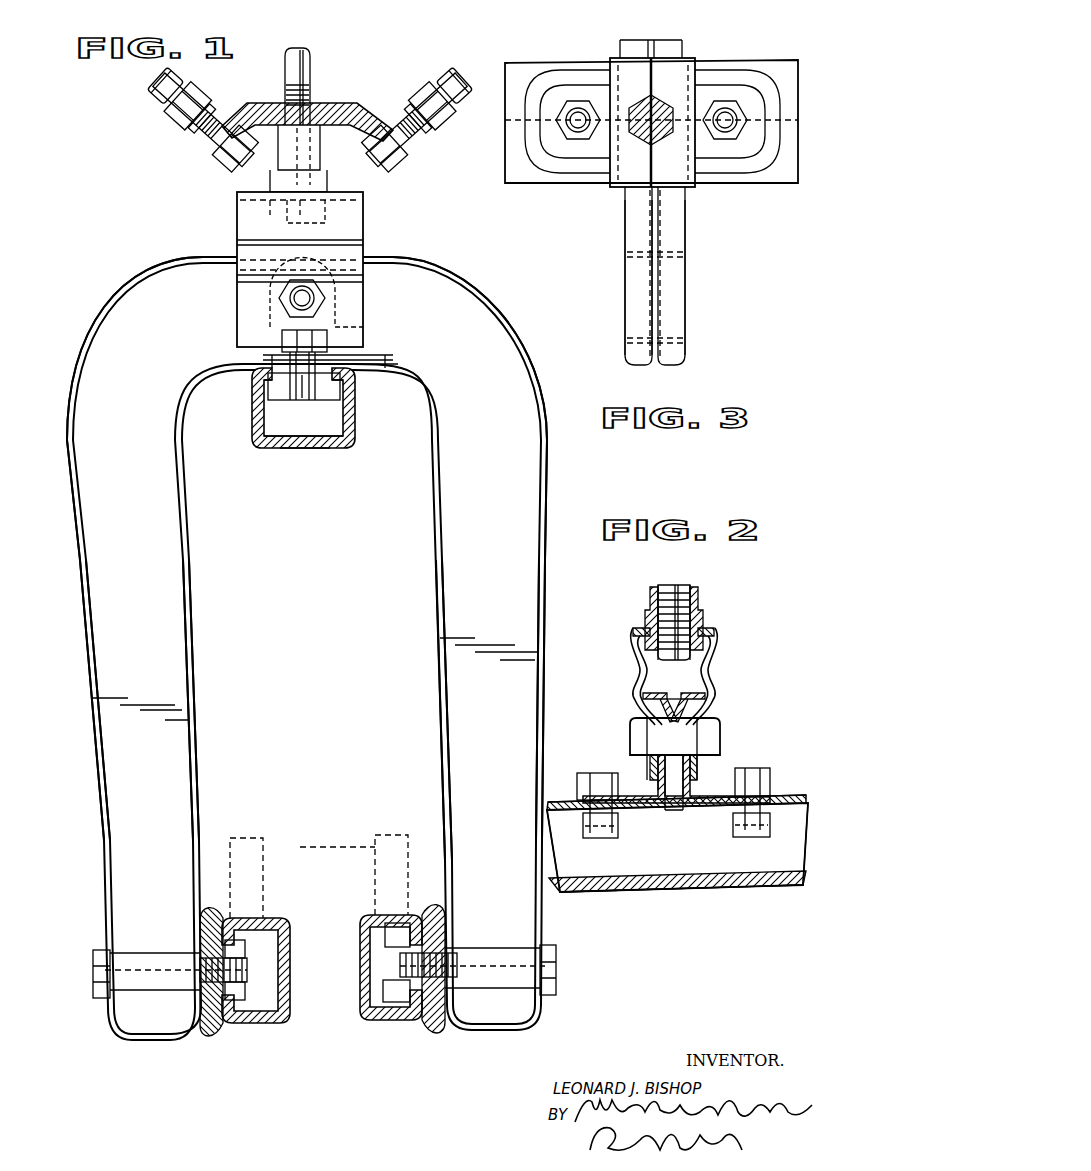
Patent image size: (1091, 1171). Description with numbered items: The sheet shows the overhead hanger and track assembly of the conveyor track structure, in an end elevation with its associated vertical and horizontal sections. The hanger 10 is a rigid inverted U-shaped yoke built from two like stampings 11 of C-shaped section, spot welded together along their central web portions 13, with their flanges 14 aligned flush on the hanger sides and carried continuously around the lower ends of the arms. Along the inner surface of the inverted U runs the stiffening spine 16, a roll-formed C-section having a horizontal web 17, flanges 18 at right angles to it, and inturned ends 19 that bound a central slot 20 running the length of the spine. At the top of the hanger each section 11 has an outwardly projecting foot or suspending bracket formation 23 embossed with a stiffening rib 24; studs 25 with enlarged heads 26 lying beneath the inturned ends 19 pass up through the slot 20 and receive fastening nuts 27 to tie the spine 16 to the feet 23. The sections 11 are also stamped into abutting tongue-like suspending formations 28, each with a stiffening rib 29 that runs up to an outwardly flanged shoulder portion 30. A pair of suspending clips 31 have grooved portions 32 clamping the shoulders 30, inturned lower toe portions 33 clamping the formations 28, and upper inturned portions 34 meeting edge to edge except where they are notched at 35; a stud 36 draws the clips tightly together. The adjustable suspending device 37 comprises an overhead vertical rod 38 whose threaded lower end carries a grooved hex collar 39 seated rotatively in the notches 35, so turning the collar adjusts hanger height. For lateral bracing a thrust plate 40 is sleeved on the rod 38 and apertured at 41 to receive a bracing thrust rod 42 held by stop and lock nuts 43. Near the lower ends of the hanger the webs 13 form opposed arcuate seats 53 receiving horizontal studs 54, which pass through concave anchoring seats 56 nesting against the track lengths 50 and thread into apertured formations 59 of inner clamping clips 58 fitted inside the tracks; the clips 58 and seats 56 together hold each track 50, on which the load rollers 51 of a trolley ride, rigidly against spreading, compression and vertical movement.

In FIG. 1, the hanger 10 is at (530, 330).
In FIG. 3, the hanger 10 is at (690, 240).
In FIG. 1, the stamping 11 is at (84, 640).
In FIG. 2, the stamping 11 is at (778, 797).
In FIG. 1, the central web portion 13 is at (110, 805).
In FIG. 3, the central web portion 13 is at (660, 290).
In FIG. 1, the flange 14 is at (185, 610).
In FIG. 3, the flange 14 is at (668, 326).
In FIG. 1, the stiffening spine 16 is at (303, 440).
In FIG. 2, the stiffening spine 16 is at (740, 888).
In FIG. 1, the horizontal web 17 is at (315, 440).
In FIG. 2, the horizontal web 17 is at (655, 893).
In FIG. 1, the flange 18 is at (255, 425).
In FIG. 2, the flange 18 is at (782, 878).
In FIG. 1, the inturned end 19 is at (288, 408).
In FIG. 2, the inturned end 19 is at (793, 808).
In FIG. 1, the central slot 20 is at (200, 972).
In FIG. 1, the suspending bracket formation 23 is at (375, 362).
In FIG. 3, the suspending bracket formation 23 is at (548, 70).
In FIG. 2, the suspending bracket formation 23 is at (556, 800).
In FIG. 1, the stiffening rib 24 is at (263, 358).
In FIG. 3, the stiffening rib 24 is at (562, 145).
In FIG. 2, the stiffening rib 24 is at (718, 803).
In FIG. 1, the stud 25 is at (300, 395).
In FIG. 2, the stud 25 is at (605, 812).
In FIG. 1, the enlarged head 26 is at (272, 388).
In FIG. 2, the enlarged head 26 is at (606, 838).
In FIG. 1, the fastening nut 27 is at (282, 345).
In FIG. 3, the fastening nut 27 is at (578, 135).
In FIG. 2, the fastening nut 27 is at (598, 775).
In FIG. 1, the tongue-like suspending formation 28 is at (330, 350).
In FIG. 2, the tongue-like suspending formation 28 is at (690, 750).
In FIG. 1, the stiffening rib 29 is at (363, 324).
In FIG. 2, the stiffening rib 29 is at (650, 762).
In FIG. 2, the flanged shoulder portion 30 is at (678, 696).
In FIG. 1, the suspending clip 31 is at (363, 245).
In FIG. 3, the suspending clip 31 is at (615, 60).
In FIG. 2, the suspending clip 31 is at (642, 668).
In FIG. 2, the grooved portion 32 is at (706, 699).
In FIG. 2, the inturned lower toe portion 33 is at (658, 786).
In FIG. 3, the upper inturned portion 34 is at (682, 198).
In FIG. 2, the upper inturned portion 34 is at (714, 630).
In FIG. 2, the notch 35 is at (633, 631).
In FIG. 1, the stud 36 is at (312, 300).
In FIG. 2, the stud 36 is at (690, 738).
In FIG. 1, the adjustable suspending device 37 is at (322, 73).
In FIG. 2, the adjustable suspending device 37 is at (700, 582).
In FIG. 1, the vertical rod 38 is at (310, 97).
In FIG. 3, the vertical rod 38 is at (660, 95).
In FIG. 2, the vertical rod 38 is at (668, 585).
In FIG. 1, the collar 39 is at (285, 207).
In FIG. 3, the collar 39 is at (648, 140).
In FIG. 2, the collar 39 is at (650, 612).
In FIG. 1, the thrust plate 40 is at (252, 108).
In FIG. 1, the aperture 41 is at (215, 150).
In FIG. 1, the bracing thrust rod 42 is at (185, 92).
In FIG. 1, the stop and lock nut 43 is at (180, 125).
In FIG. 1, the track length 50 is at (292, 922).
In FIG. 1, the load roller 51 is at (258, 870).
In FIG. 1, the arcuate seat 53 is at (150, 990).
In FIG. 1, the horizontal stud 54 is at (130, 960).
In FIG. 1, the anchoring seat 56 is at (205, 908).
In FIG. 1, the inner clamping clip 58 is at (245, 993).
In FIG. 1, the apertured formation 59 is at (245, 952).